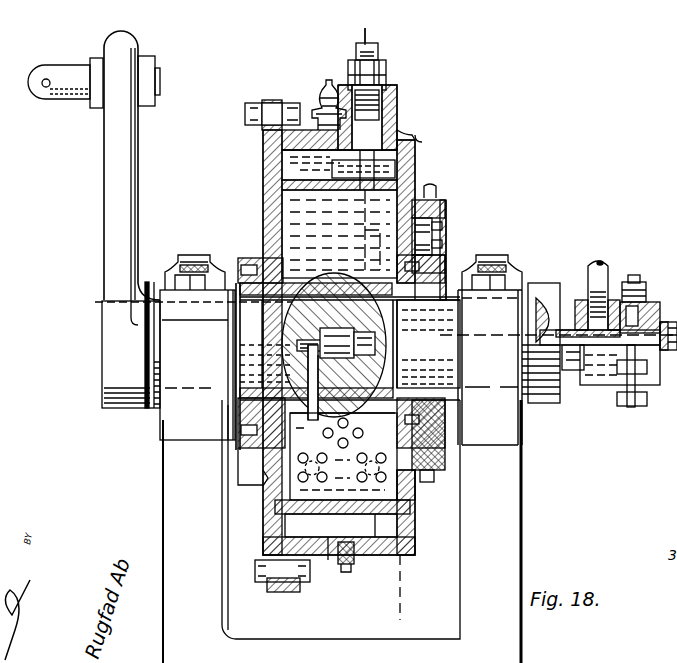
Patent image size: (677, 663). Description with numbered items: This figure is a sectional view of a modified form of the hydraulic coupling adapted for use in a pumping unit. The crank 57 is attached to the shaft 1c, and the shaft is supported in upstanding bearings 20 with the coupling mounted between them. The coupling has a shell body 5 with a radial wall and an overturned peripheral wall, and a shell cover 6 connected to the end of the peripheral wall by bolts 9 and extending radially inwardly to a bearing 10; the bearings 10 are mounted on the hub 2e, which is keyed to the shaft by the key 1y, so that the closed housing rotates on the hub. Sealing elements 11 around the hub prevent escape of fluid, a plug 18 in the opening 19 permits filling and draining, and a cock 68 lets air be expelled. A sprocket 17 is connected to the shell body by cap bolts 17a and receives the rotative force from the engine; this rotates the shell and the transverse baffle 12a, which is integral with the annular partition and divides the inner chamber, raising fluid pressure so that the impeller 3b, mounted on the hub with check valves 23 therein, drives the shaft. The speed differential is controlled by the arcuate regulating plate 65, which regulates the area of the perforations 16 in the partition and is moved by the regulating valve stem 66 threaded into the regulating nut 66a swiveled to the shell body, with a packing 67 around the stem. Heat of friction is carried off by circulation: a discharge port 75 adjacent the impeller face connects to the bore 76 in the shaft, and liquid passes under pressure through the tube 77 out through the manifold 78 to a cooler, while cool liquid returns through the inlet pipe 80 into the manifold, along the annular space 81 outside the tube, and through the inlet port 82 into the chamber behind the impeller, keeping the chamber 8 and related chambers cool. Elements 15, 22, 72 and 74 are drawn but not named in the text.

The shaft 1c is at (102, 360).
The key 1y is at (238, 288).
The hub 2e is at (225, 400).
The impeller 3b is at (272, 485).
The shell body 5 is at (412, 142).
The shell cover 6 is at (262, 172).
The chamber 8 is at (339, 165).
The bolts 9 is at (248, 108).
The bearing 10 is at (272, 296).
The sealing elements 11 is at (447, 265).
The transverse baffle 12a is at (305, 232).
The partition plate 15 is at (356, 512).
The perforations 16 is at (380, 515).
The sprocket 17 is at (437, 200).
The cap bolts 17a is at (445, 226).
The plug 18 is at (345, 566).
The opening 19 is at (343, 331).
The upstanding bearings 20 is at (183, 268).
The partition band 22 is at (288, 288).
The check valves 23 is at (420, 490).
The crank 57 is at (139, 157).
The arcuate regulating plate 65 is at (398, 168).
The regulating valve stem 66 is at (378, 60).
The regulating nut 66a is at (388, 75).
The packing 67 is at (393, 132).
The cock 68 is at (322, 96).
The crank pin 72 is at (63, 98).
The bottom bolt 74 is at (328, 555).
The discharge port 75 is at (266, 468).
The bore 76 is at (298, 343).
The tube 77 is at (370, 348).
The manifold 78 is at (648, 302).
The inlet pipe 80 is at (604, 266).
The annular space 81 is at (370, 329).
The inlet port 82 is at (362, 408).